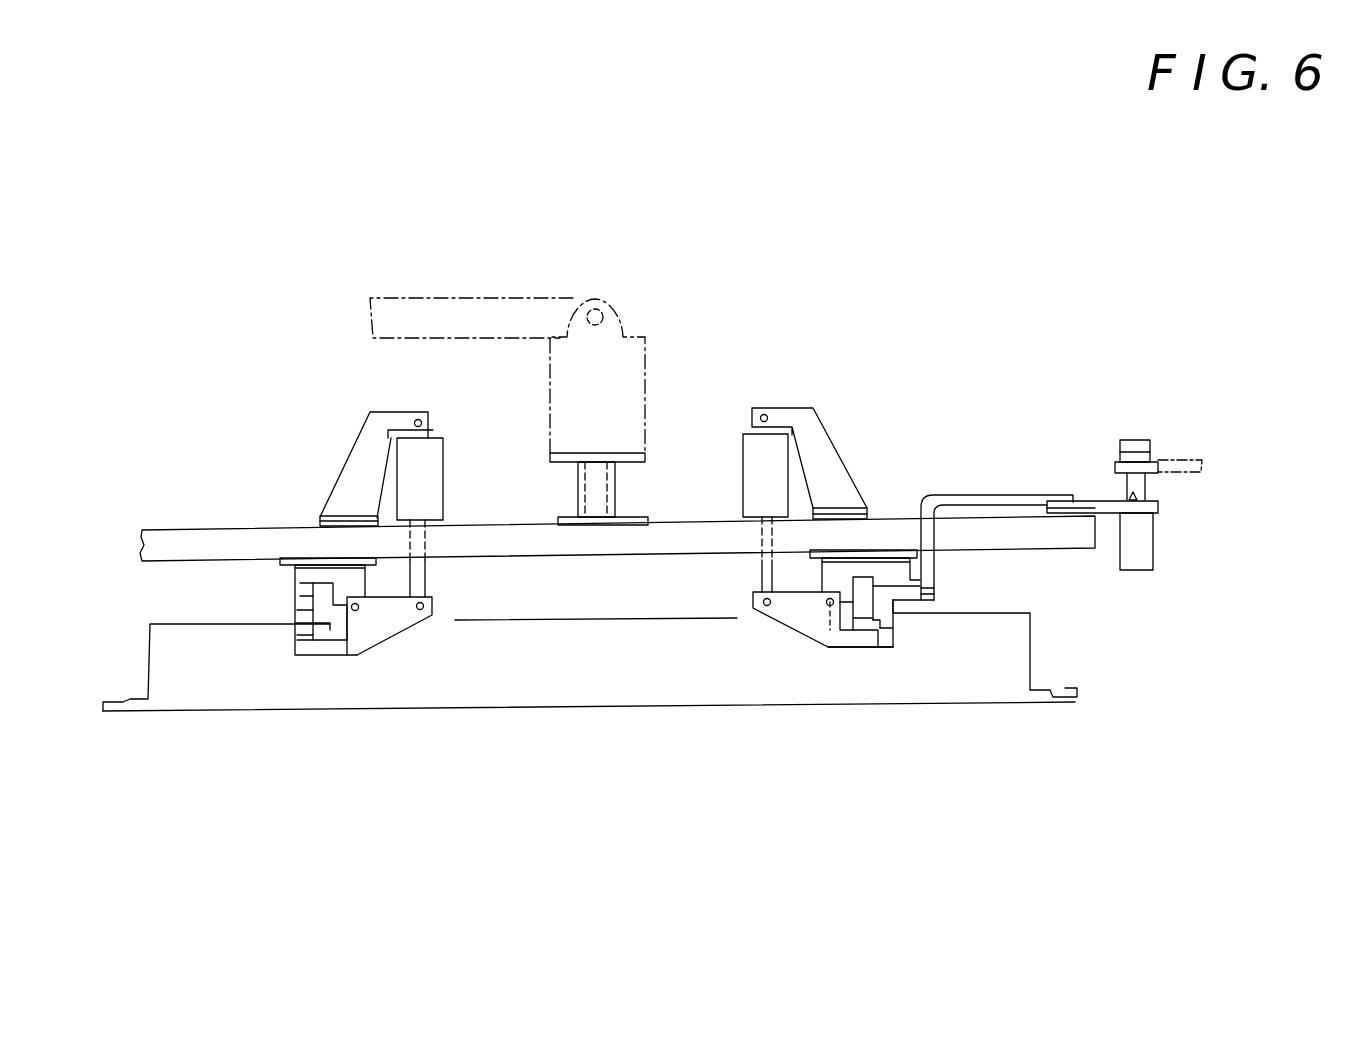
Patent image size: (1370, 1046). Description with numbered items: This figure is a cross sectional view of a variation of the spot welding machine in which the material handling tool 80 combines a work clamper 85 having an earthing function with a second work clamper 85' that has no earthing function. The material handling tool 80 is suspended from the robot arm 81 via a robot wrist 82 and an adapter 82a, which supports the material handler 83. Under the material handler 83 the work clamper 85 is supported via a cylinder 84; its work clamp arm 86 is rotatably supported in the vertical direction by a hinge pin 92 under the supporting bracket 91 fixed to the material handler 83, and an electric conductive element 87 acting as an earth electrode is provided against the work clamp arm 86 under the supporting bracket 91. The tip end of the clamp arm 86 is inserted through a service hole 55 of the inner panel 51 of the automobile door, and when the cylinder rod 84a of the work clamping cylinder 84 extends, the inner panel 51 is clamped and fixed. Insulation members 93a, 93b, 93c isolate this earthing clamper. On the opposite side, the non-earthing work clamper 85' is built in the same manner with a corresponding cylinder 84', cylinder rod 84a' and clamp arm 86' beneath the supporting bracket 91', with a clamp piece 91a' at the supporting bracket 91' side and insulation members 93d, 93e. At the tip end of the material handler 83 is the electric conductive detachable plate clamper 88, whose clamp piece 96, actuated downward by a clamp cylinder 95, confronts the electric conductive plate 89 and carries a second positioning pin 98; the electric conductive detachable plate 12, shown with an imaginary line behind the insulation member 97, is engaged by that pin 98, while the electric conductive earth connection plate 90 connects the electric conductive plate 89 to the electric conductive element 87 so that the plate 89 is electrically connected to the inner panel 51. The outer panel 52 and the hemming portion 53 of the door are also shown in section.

The electric conductive detachable plate 12 is at (1207, 462).
The inner panel 51 is at (667, 618).
The outer panel 52 is at (870, 645).
The hemming portion 53 is at (1080, 697).
The service hole 55 is at (458, 621).
The material handling tool 80 is at (905, 482).
The robot arm 81 is at (505, 297).
The robot wrist 82 is at (628, 348).
The adapter 82a is at (615, 502).
The material handler 83 is at (688, 533).
The cylinder 84 is at (778, 409).
The cylinder 84' is at (366, 411).
The cylinder rod 84a is at (694, 562).
The piston rod 84a' is at (406, 689).
The work clamper 85 is at (805, 725).
The work clamper 85' is at (380, 728).
The work clamp arm 86 is at (898, 730).
The holder 86' is at (288, 749).
The electric conductive element 87 is at (933, 588).
The electric conductive detachable plate clamper 88 is at (1173, 424).
The electric conductive plate 89 is at (1100, 506).
The electric conductive earth connection plate 90 is at (1020, 500).
The supporting bracket 91 is at (821, 439).
The supporting bracket 91' is at (335, 414).
The clamp piece 91a' is at (277, 478).
The hinge pin 92 is at (830, 606).
The insulation member 93a is at (890, 580).
The insulation member 93b is at (891, 628).
The insulation member 93c is at (1073, 517).
The insulation member 93d is at (305, 594).
The insulation member 93e is at (300, 630).
The clamp cylinder 95 is at (1140, 545).
The clamp piece 96 is at (1135, 443).
The insulation member 97 is at (1150, 457).
The second positioning pin 98 is at (1136, 497).